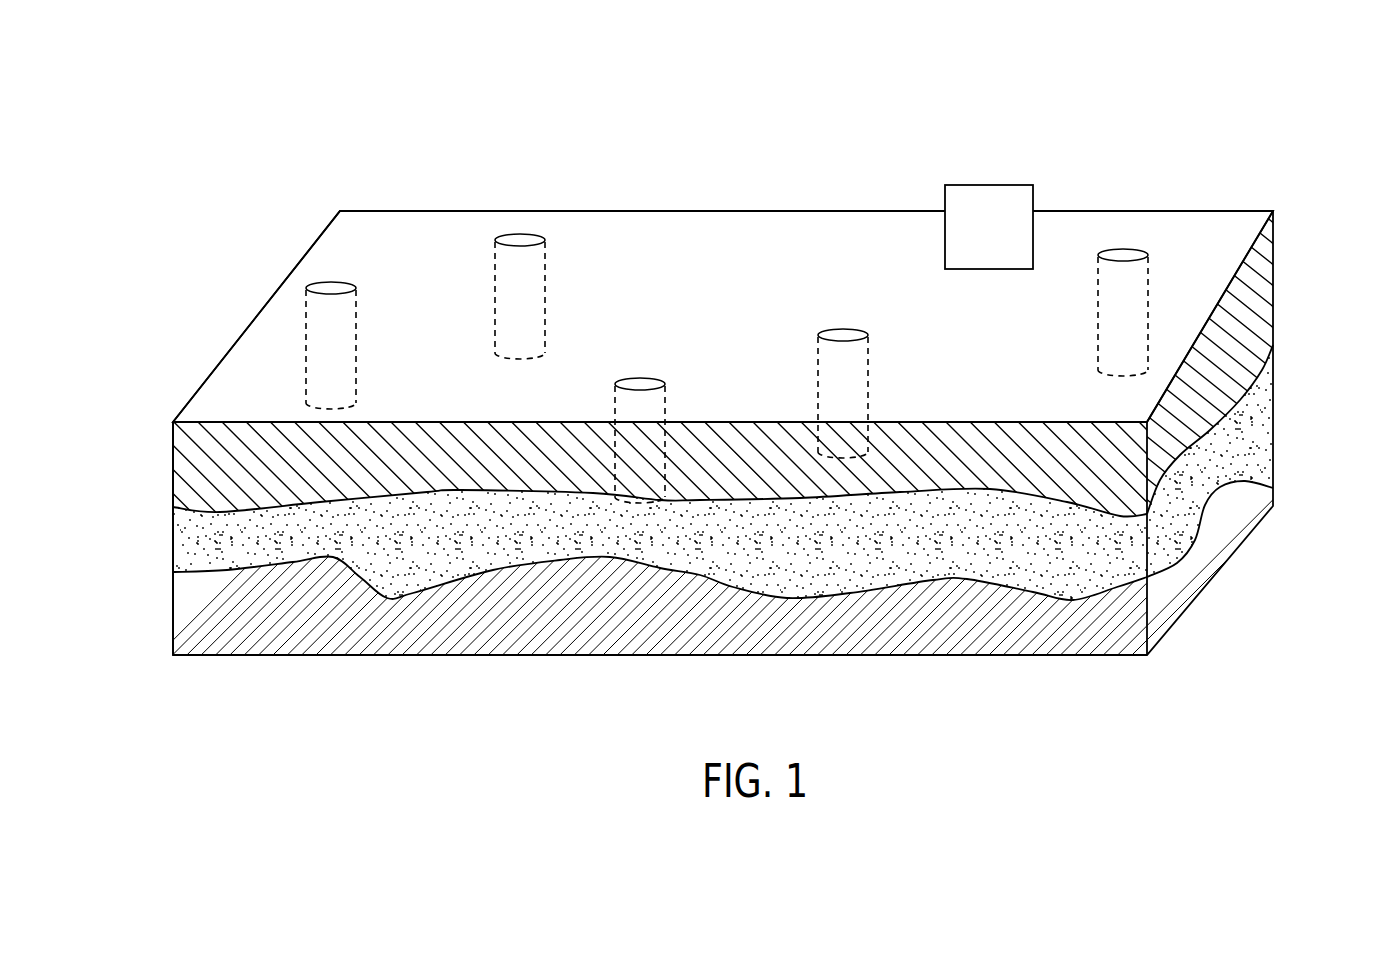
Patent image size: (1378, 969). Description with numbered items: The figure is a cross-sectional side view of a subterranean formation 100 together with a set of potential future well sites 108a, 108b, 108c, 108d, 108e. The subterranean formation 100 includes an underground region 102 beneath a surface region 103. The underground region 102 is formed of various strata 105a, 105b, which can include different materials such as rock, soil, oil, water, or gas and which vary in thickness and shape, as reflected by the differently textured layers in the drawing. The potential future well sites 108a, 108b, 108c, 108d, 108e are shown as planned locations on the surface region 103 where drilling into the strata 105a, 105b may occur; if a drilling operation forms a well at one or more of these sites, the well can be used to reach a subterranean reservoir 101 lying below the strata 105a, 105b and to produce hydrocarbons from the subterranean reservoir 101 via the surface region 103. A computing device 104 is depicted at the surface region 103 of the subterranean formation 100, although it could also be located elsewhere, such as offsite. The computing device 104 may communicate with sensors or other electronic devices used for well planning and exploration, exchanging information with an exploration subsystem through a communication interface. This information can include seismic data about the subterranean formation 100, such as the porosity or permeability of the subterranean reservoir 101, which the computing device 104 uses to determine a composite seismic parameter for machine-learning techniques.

The subterranean formation 100 is at (299, 120).
The subterranean reservoir 101 is at (1272, 486).
The underground region 102 is at (140, 508).
The surface region 103 is at (740, 224).
The computing device 104 is at (1005, 242).
The stratum 105a is at (1267, 290).
The stratum 105b is at (1267, 420).
The potential future well site 108a is at (317, 283).
The potential future well site 108b is at (515, 234).
The potential future well site 108c is at (640, 378).
The potential future well site 108d is at (843, 329).
The potential future well site 108e is at (1123, 249).